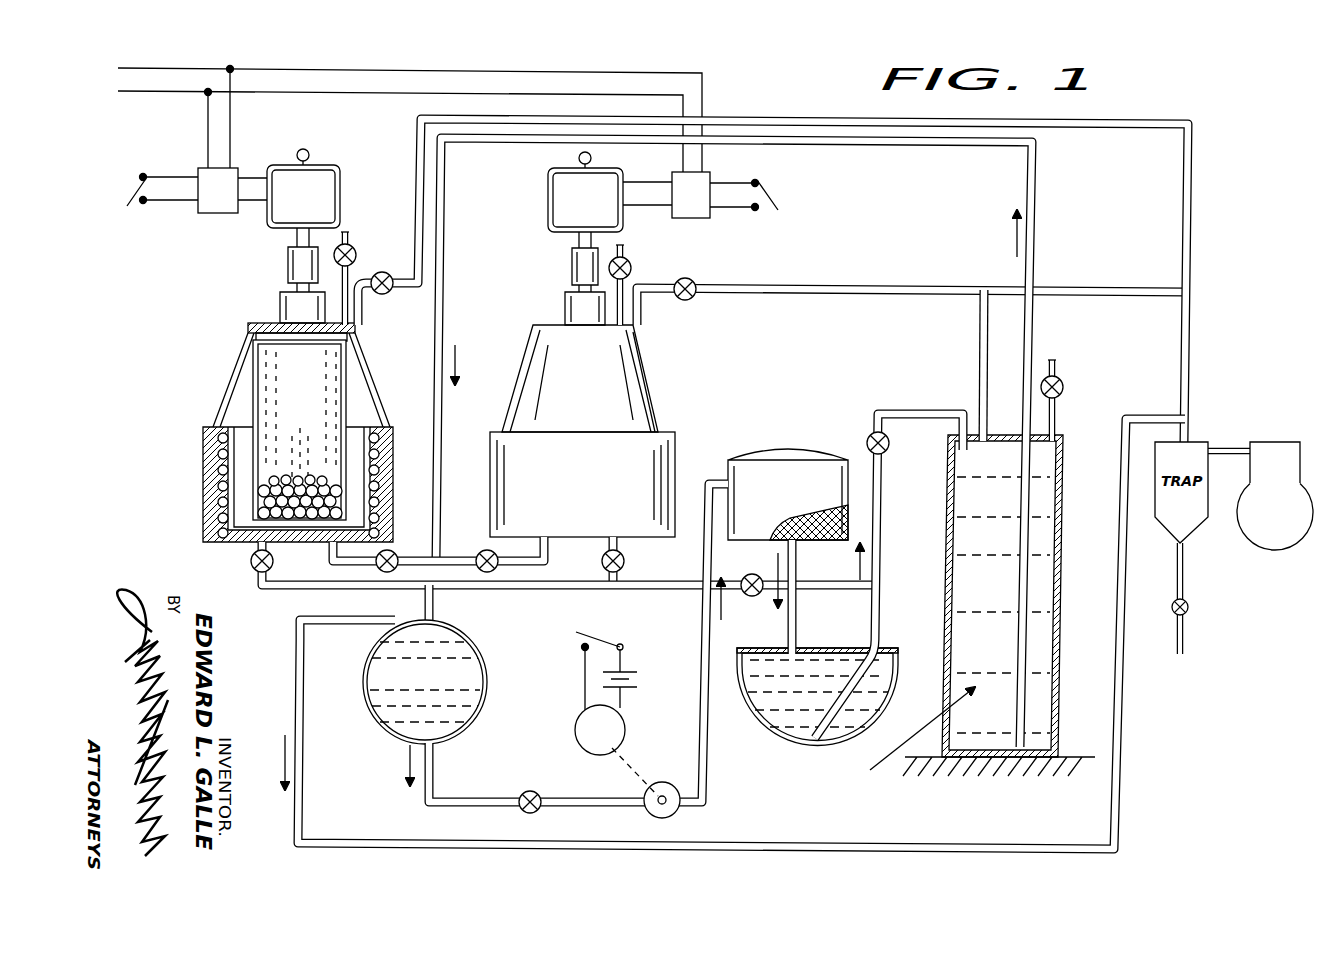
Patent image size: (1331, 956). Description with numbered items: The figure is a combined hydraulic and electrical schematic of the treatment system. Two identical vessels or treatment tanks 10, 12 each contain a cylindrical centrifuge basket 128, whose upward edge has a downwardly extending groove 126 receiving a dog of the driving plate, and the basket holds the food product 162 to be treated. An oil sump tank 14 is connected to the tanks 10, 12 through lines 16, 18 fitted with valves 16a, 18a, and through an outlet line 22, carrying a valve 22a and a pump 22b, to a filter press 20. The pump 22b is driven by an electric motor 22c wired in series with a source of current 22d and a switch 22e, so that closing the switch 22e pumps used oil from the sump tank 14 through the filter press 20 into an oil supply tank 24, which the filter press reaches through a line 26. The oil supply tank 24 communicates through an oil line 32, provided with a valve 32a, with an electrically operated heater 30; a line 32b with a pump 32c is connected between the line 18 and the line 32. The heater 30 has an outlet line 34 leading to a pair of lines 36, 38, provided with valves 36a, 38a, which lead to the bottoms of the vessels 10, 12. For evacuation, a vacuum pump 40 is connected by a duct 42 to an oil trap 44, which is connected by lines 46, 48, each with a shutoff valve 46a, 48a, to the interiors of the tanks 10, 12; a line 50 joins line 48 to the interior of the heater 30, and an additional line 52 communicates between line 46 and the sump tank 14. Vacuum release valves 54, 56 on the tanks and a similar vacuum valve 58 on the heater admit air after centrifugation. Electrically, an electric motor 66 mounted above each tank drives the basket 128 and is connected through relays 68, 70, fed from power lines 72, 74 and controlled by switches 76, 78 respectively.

The vessel or treatment tank 10 is at (225, 388).
The vessel or treatment tank 12 is at (658, 388).
The oil sump tank 14 is at (373, 722).
The line 16 is at (290, 591).
The valve 16a is at (251, 563).
The line 18 is at (519, 596).
The valve 18a is at (626, 564).
The filter press 20 is at (770, 456).
The outlet line 22 is at (496, 782).
The valve 22a is at (540, 795).
The pump 22b is at (668, 784).
The electric motor 22c is at (580, 740).
The source of current 22d is at (628, 676).
The switch 22e is at (604, 641).
The oil supply tank 24 is at (760, 648).
The line 26 is at (800, 618).
The electrically operated heater 30 is at (948, 490).
The oil line 32 is at (926, 413).
The valve 32a is at (868, 441).
The line 32b is at (698, 591).
The pump 32c is at (750, 569).
The outlet line 34 is at (451, 320).
The line 36 is at (400, 556).
The valve 36a is at (378, 591).
The line 38 is at (464, 557).
The valve 38a is at (518, 546).
The vacuum pump 40 is at (1276, 442).
The duct 42 is at (1235, 425).
The oil trap 44 is at (1196, 530).
The line 46 is at (755, 121).
The shutoff valve 46a is at (388, 296).
The line 48 is at (641, 312).
The shutoff valve 48a is at (697, 288).
The line 50 is at (981, 352).
The line 52 is at (992, 852).
The vacuum release valve 54 is at (358, 257).
The vacuum release valve 56 is at (630, 269).
The vacuum valve 58 is at (1060, 380).
The electric motor 66 is at (332, 200).
The relay 68 is at (218, 215).
The relay 70 is at (702, 190).
The power line 72 is at (432, 70).
The power line 74 is at (376, 97).
The switch 76 is at (128, 186).
The switch 78 is at (768, 205).
The groove 126 is at (275, 336).
The cylindrical centrifuge basket 128 is at (258, 362).
The food product 162 is at (266, 488).